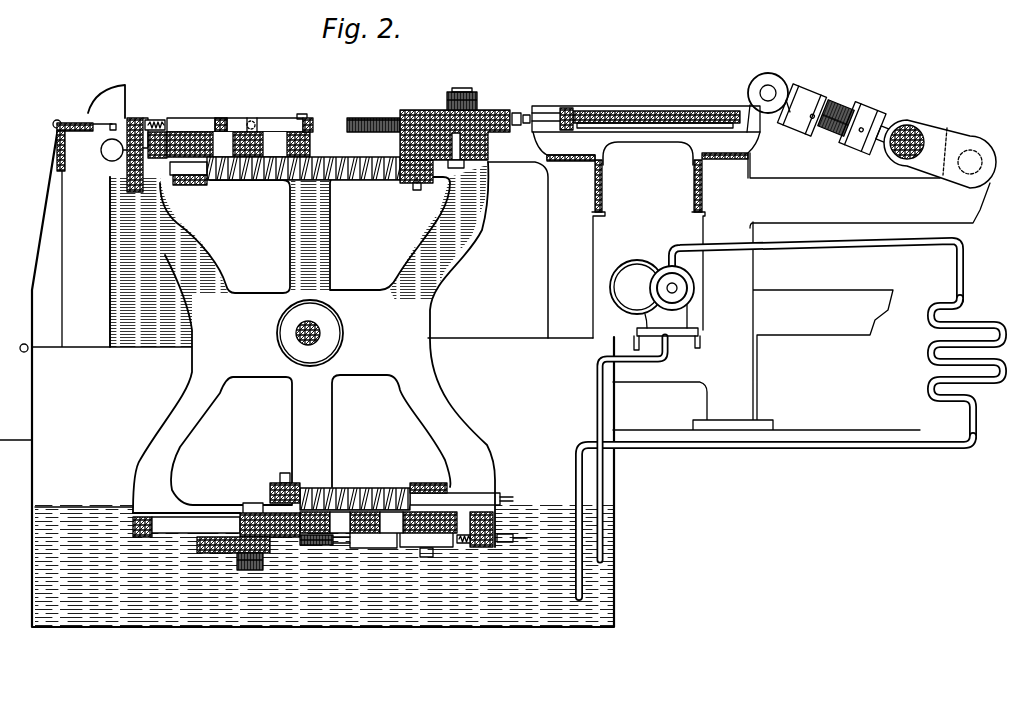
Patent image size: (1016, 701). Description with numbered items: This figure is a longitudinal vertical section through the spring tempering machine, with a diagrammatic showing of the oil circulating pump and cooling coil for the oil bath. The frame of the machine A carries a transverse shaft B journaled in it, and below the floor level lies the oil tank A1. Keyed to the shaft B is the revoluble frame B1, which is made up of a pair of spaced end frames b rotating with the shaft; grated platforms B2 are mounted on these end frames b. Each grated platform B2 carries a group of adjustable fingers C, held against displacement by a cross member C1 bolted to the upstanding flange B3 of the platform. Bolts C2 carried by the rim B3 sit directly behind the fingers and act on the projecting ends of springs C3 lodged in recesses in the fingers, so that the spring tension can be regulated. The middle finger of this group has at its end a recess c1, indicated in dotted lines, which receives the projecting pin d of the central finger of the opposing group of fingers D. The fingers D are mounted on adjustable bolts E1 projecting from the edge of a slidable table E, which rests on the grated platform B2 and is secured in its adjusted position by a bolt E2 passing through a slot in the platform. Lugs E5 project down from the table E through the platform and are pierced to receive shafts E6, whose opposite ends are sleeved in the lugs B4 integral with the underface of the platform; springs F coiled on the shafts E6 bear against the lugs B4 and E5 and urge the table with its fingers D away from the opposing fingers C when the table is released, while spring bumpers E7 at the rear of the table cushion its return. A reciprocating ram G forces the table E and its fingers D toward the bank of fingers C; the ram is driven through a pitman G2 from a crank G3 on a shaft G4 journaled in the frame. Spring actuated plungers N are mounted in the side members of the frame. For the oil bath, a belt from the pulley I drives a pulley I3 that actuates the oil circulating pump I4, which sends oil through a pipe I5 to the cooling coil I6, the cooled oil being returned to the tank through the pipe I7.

The frame of the machine A is at (112, 233).
The oil tank A1 is at (307, 458).
The transverse shaft B is at (320, 333).
The revoluble frame B1 is at (302, 354).
The grated platforms B2 is at (285, 118).
The upstanding flange B3 is at (143, 118).
The lugs B4 is at (205, 187).
The end frames b is at (221, 441).
The adjustable fingers C is at (378, 535).
The cross member C1 is at (175, 108).
The bolts C2 is at (312, 317).
The springs C3 is at (160, 125).
The recess c1 is at (250, 118).
The adjustable fingers D is at (338, 110).
The projecting pin d is at (302, 106).
The slidable tables E is at (420, 104).
The adjustable bolts E1 is at (378, 108).
The bolt E2 is at (466, 80).
The lugs E5 is at (417, 190).
The shafts E6 is at (375, 192).
The spring bumpers E7 is at (518, 112).
The springs F is at (277, 180).
The reciprocating ram G is at (590, 106).
The pitman G2 is at (830, 92).
The crank G3 is at (975, 150).
The shaft G4 is at (960, 178).
The pulley I is at (596, 392).
The pulley I3 is at (655, 305).
The oil circulating pump I4 is at (694, 288).
The pipe I5 is at (796, 242).
The cooling coil I6 is at (949, 367).
The pipe I7 is at (800, 448).
The spring actuated plungers N is at (100, 158).